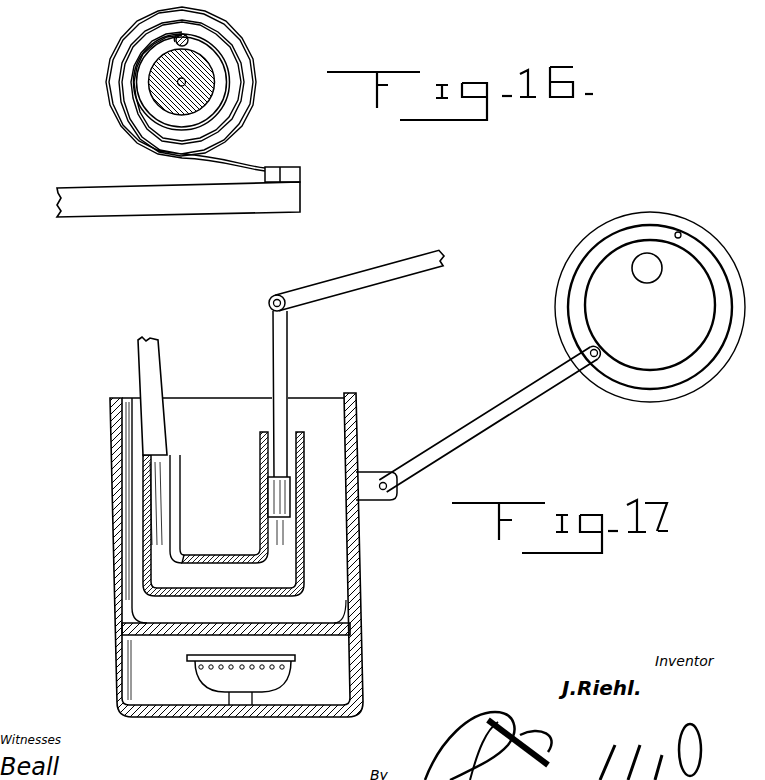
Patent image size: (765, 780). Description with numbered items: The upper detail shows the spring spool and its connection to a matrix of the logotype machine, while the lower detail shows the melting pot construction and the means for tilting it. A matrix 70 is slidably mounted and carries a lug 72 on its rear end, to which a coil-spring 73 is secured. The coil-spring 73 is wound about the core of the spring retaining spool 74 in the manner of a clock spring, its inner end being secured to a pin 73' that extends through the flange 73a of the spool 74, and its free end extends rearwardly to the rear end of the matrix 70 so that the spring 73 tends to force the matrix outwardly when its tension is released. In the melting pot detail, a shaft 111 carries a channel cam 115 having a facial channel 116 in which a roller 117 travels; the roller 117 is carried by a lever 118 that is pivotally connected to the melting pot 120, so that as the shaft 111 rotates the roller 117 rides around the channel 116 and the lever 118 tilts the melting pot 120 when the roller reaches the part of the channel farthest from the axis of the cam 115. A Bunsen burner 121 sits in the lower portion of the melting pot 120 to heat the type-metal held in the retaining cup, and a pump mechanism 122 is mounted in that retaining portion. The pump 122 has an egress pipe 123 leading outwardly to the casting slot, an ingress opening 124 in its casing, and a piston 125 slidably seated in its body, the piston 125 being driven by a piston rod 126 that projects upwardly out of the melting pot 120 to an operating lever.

In FIG. 16, the matrix 70 is at (235, 202).
In FIG. 16, the lug 72 is at (291, 172).
In FIG. 16, the coil-spring 73 is at (191, 89).
In FIG. 16, the pin 73' is at (145, 29).
In FIG. 16, the flange 73a is at (245, 102).
In FIG. 16, the spring retaining spool 74 is at (194, 72).
In FIG. 17, the shaft 111 is at (645, 270).
In FIG. 17, the channel cam 115 is at (680, 342).
In FIG. 17, the facial channel 116 is at (679, 233).
In FIG. 17, the roller 117 is at (595, 362).
In FIG. 17, the lever 118 is at (530, 398).
In FIG. 17, the melting pot 120 is at (128, 632).
In FIG. 17, the Bunsen burner 121 is at (222, 662).
In FIG. 17, the pump mechanism 122 is at (285, 560).
In FIG. 17, the egress pipe 123 is at (150, 419).
In FIG. 17, the ingress opening 124 is at (300, 497).
In FIG. 17, the piston 125 is at (300, 472).
In FIG. 17, the piston rod 126 is at (281, 368).